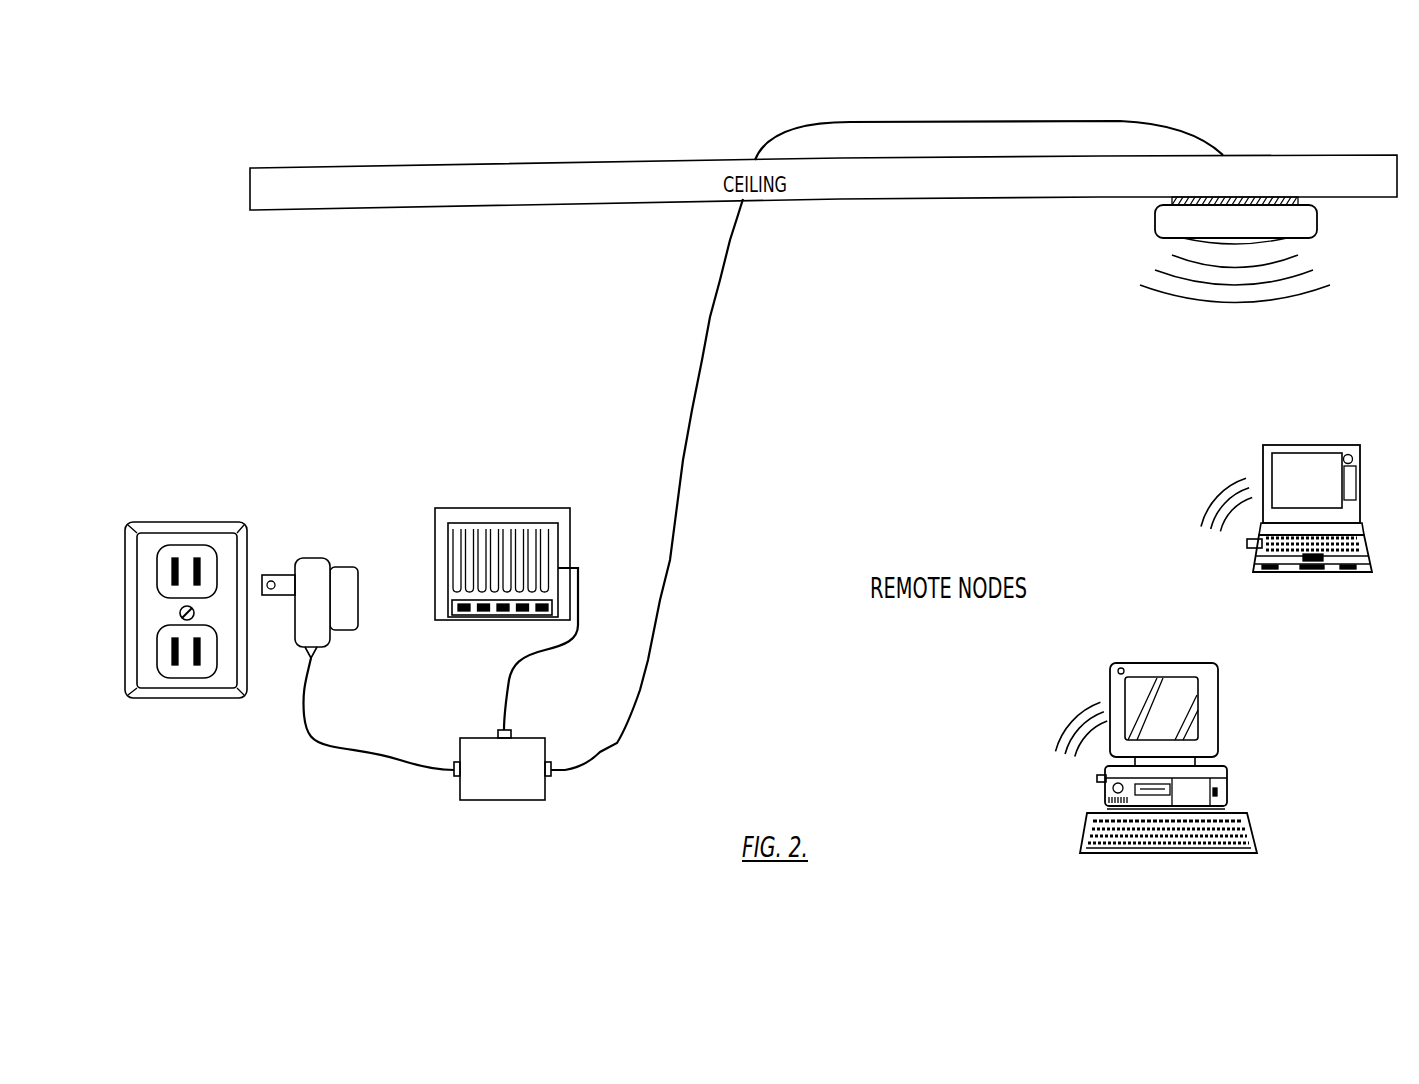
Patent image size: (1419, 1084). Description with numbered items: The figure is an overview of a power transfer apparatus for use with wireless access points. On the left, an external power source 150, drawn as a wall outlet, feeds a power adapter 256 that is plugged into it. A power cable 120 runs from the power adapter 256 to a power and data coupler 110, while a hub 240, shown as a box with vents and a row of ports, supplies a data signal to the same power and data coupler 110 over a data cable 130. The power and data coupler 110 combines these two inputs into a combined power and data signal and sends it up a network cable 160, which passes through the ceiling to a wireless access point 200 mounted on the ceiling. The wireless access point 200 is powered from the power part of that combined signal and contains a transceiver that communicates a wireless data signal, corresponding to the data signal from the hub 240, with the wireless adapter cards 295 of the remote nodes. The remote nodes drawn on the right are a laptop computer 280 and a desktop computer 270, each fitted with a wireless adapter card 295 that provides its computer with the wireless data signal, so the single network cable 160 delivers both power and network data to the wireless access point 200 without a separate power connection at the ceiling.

The power and data coupler 110 is at (506, 805).
The power cable 120 is at (300, 737).
The data cable 130 is at (516, 712).
The external power source 150 is at (186, 555).
The network cable 160 is at (860, 137).
The wireless access point 200 is at (1321, 232).
The hub 240 is at (502, 580).
The power adapter 256 is at (310, 568).
The desktop computer 270 is at (1160, 778).
The laptop computer 280 is at (1299, 529).
The wireless adapter card 295 is at (1002, 798).